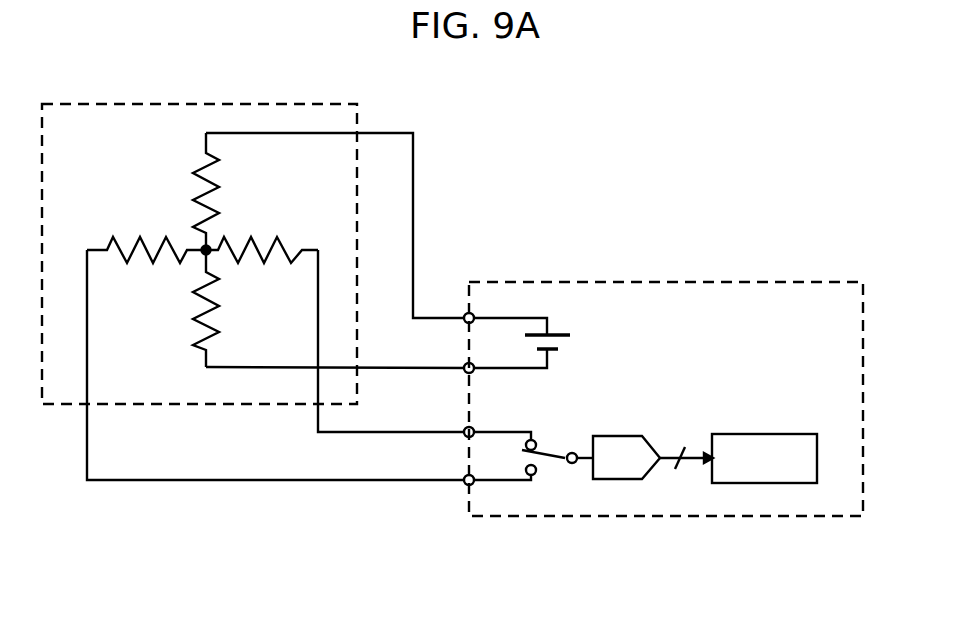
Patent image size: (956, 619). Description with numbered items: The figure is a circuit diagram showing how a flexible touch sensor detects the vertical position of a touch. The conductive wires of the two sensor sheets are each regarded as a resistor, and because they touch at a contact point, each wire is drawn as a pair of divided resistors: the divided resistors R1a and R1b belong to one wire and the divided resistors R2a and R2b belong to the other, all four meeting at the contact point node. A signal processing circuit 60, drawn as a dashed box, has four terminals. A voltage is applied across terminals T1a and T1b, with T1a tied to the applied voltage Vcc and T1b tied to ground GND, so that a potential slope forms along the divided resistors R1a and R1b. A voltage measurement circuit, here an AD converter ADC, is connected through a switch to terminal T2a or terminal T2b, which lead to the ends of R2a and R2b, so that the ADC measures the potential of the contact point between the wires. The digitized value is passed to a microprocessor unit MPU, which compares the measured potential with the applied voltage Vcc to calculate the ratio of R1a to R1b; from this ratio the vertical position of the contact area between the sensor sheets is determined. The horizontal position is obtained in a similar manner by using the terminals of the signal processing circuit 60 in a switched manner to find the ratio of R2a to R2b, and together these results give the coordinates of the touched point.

The signal processing circuit 60 is at (723, 282).
The divided resistor R1a is at (230, 191).
The divided resistor R1b is at (230, 308).
The divided resistor R2a is at (262, 235).
The divided resistor R2b is at (146, 235).
The terminal T1a is at (340, 228).
The terminal T1b is at (340, 383).
The terminal T2a is at (396, 358).
The terminal T2b is at (280, 367).
The applied voltage Vcc is at (534, 315).
The ground GND is at (540, 370).
The AD converter ADC is at (626, 457).
The microprocessor unit MPU is at (764, 458).